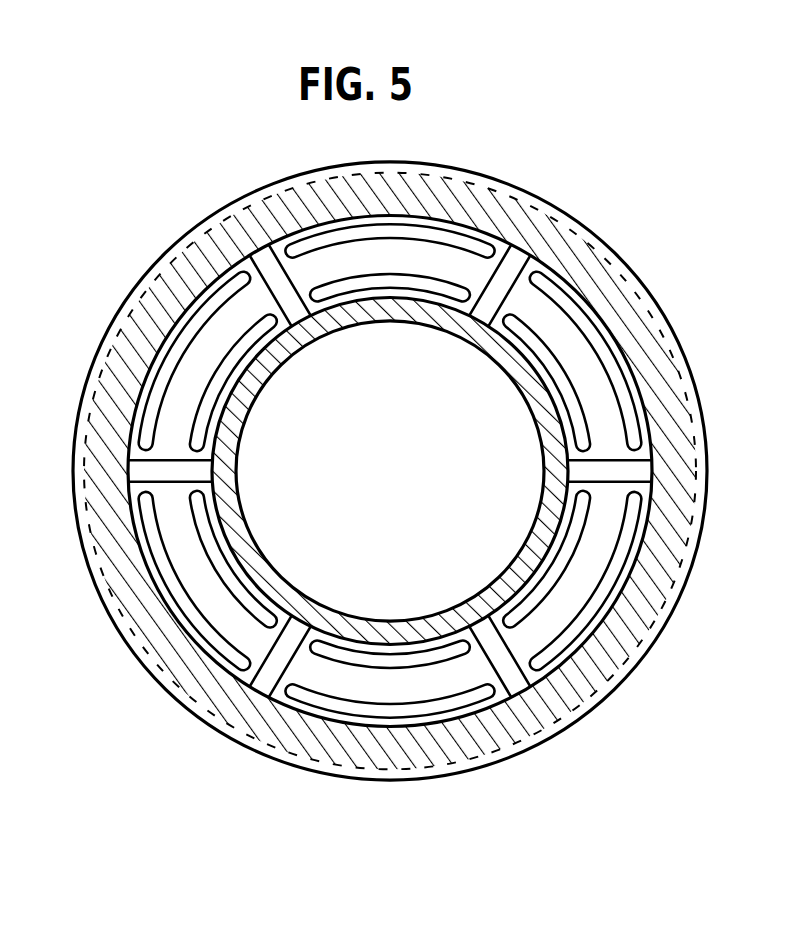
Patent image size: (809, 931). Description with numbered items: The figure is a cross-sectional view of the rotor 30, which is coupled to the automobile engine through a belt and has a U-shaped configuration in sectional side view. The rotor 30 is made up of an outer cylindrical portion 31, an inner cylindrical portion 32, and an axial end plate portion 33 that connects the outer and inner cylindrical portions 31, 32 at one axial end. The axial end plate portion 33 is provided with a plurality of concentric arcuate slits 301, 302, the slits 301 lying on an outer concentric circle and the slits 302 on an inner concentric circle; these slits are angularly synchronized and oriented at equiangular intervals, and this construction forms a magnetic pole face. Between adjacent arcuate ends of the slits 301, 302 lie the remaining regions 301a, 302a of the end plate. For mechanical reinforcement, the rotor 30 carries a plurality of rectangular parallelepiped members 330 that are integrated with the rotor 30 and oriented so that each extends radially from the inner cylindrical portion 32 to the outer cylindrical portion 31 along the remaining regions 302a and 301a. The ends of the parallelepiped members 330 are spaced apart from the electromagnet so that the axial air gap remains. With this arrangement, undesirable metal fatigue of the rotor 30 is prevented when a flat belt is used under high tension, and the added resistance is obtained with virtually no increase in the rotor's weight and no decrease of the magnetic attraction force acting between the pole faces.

The rotor 30 is at (549, 205).
The outer cylindrical portion 31 is at (692, 512).
The axial end plate portion 33 is at (657, 636).
The inner cylindrical portion 32 is at (540, 517).
The rectangular parallelepiped member 330 is at (644, 463).
The arcuate slit 301 is at (607, 352).
The arcuate slit 302 is at (580, 417).
The remaining region 301a is at (580, 583).
The remaining region 302a is at (588, 491).